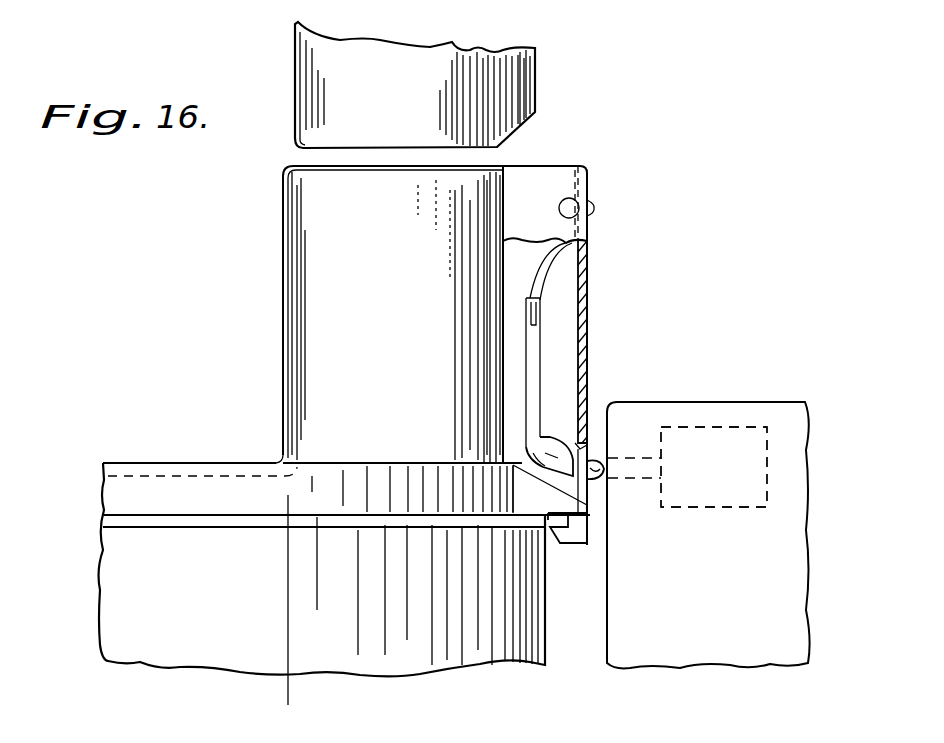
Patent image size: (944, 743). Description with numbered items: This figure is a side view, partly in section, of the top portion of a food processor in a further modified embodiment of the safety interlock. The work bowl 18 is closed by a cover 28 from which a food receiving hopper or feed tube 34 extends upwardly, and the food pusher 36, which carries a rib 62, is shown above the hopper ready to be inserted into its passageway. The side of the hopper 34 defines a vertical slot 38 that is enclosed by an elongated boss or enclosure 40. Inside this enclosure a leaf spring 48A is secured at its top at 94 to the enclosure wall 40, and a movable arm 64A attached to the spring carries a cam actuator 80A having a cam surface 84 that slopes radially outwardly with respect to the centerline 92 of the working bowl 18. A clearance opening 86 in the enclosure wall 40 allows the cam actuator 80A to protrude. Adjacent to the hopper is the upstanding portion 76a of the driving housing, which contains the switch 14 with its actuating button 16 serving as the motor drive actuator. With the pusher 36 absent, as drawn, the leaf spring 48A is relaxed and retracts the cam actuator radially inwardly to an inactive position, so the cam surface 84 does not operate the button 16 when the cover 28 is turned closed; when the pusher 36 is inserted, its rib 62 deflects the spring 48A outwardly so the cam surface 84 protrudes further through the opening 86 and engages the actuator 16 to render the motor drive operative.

The switch 14 is at (733, 423).
The actuating button 16 is at (630, 453).
The work bowl 18 is at (90, 608).
The cover 28 is at (160, 465).
The feed tube 34 is at (283, 298).
The food pusher 36 is at (295, 78).
The vertical slot 38 is at (487, 302).
The enclosure 40 is at (587, 302).
The leaf spring 48A is at (587, 270).
The rib 62 is at (525, 80).
The movable arm 64A is at (540, 350).
The upstanding portion of the housing 76a is at (800, 402).
The cam actuator 80A is at (540, 436).
The cam surface 84 is at (552, 520).
The clearance opening 86 is at (598, 455).
The centerline 92 is at (290, 650).
The securing point of leaf spring 94 is at (596, 208).